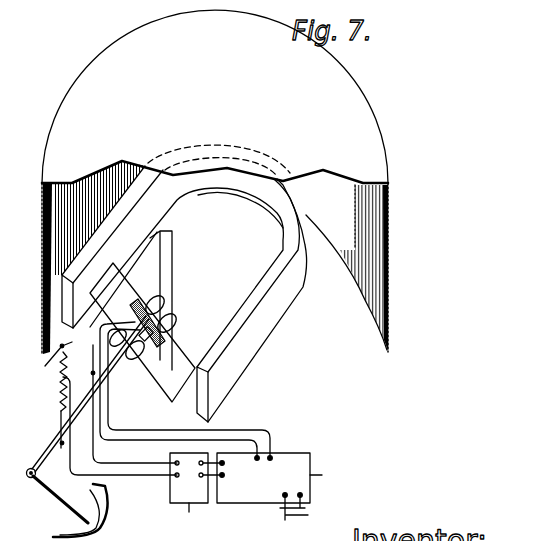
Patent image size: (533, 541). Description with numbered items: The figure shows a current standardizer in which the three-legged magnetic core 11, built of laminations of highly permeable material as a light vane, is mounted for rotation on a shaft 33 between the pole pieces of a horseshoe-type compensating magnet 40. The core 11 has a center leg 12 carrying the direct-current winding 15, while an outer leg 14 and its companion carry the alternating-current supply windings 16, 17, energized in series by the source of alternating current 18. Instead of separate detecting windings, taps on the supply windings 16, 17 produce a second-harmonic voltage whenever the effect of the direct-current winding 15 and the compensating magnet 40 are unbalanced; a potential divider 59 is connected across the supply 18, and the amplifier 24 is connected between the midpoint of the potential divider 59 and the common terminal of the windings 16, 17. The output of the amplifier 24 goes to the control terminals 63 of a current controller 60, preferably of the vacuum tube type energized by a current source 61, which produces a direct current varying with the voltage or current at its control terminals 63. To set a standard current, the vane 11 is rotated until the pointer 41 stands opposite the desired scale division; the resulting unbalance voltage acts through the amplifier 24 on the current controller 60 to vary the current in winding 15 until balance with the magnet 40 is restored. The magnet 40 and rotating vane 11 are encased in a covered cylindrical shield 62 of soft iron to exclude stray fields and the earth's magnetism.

The magnetic core 11 is at (142, 332).
The center leg 12 is at (143, 318).
The outer leg 14 is at (137, 367).
The direct-current winding 15 is at (176, 328).
The alternating-current supply winding 16 is at (165, 306).
The alternating-current supply winding 17 is at (150, 354).
The source of alternating current 18 is at (54, 360).
The amplifier 24 is at (180, 490).
The shaft 33 is at (52, 456).
The compensating magnet 40 is at (240, 310).
The pointer 41 is at (55, 503).
The potential divider 59 is at (67, 349).
The current controller 60 is at (337, 478).
The current source 61 is at (313, 510).
The cylindrical shield 62 is at (388, 190).
The control terminals 63 is at (226, 469).